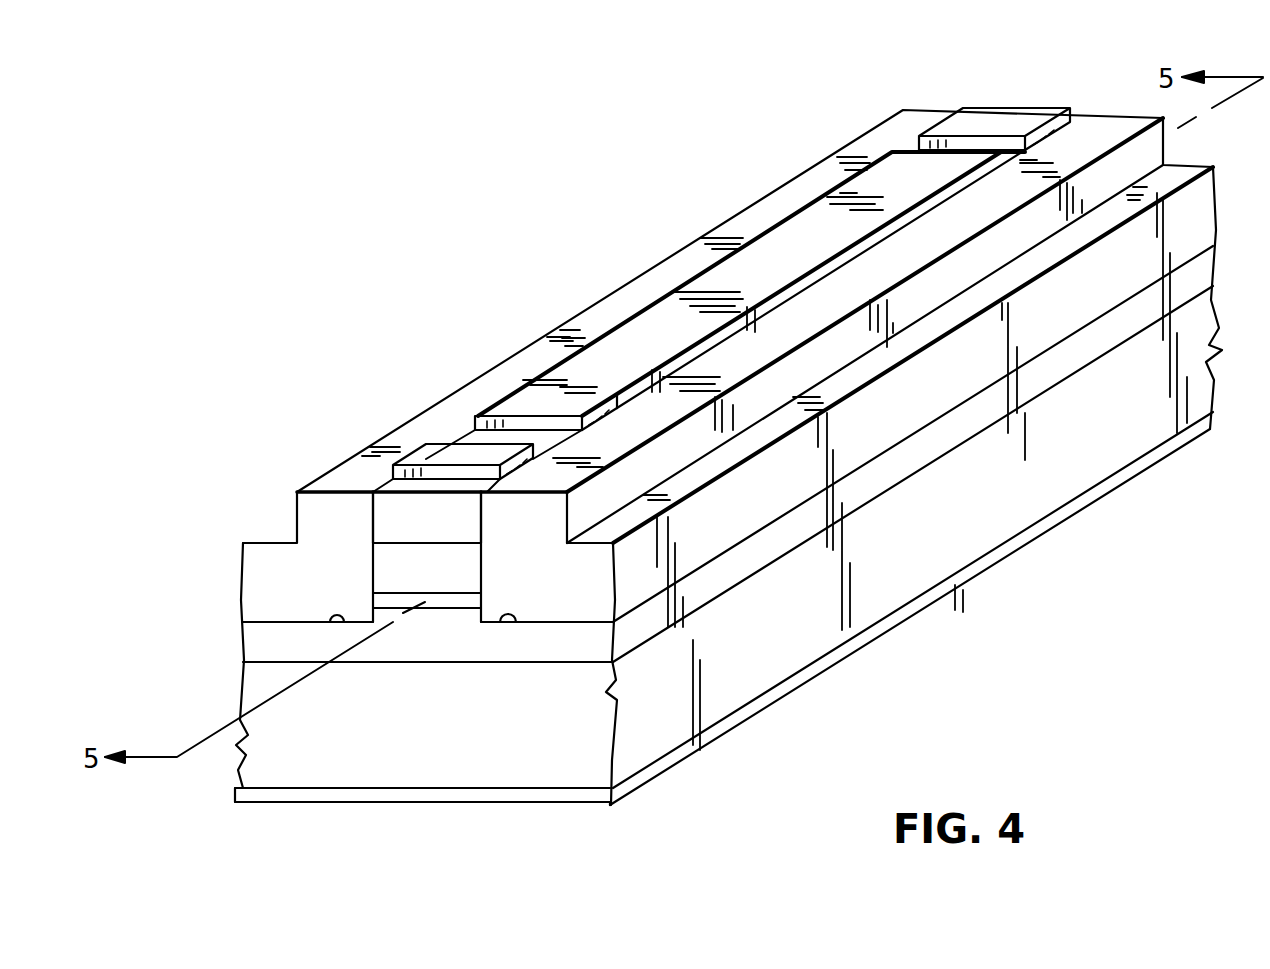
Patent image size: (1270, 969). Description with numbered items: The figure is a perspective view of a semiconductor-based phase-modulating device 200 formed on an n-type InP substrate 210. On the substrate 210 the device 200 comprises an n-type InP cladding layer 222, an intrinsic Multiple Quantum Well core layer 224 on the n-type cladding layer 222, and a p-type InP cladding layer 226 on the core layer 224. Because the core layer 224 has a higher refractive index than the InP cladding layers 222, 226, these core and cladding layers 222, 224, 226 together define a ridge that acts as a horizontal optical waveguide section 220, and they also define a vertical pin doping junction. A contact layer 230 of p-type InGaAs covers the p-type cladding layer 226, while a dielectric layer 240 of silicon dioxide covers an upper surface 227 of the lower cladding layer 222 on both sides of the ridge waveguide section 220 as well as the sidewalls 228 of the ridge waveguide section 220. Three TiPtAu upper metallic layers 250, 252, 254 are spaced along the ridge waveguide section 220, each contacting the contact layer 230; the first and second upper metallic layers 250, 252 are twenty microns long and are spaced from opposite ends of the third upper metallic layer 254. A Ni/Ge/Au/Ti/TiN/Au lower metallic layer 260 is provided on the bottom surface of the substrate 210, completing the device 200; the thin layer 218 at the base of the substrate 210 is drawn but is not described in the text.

The phase-modulating device 200 is at (940, 640).
The substrate 210 is at (273, 717).
The bottom contact layer 218 is at (430, 793).
The ridge waveguide section 220 is at (135, 557).
The n-type InP cladding layer 222 is at (265, 637).
The core layer 224 is at (373, 597).
The p-type InP cladding layer 226 is at (373, 578).
The upper surface 227 is at (338, 612).
The sidewalls 228 is at (373, 560).
The contact layer 230 is at (388, 530).
The dielectric layer 240 is at (317, 523).
The first upper metallic layer 250 is at (433, 457).
The second upper metallic layer 252 is at (1022, 122).
The third upper metallic layer 254 is at (722, 290).
The lower metallic layer 260 is at (270, 795).